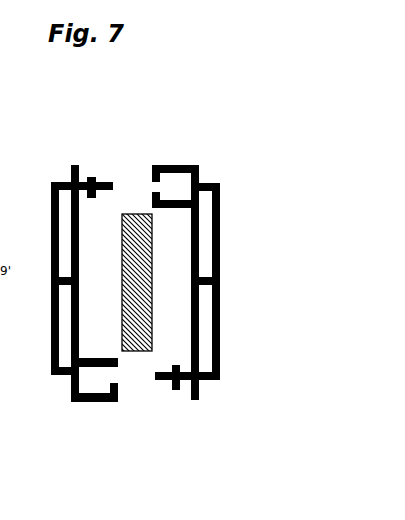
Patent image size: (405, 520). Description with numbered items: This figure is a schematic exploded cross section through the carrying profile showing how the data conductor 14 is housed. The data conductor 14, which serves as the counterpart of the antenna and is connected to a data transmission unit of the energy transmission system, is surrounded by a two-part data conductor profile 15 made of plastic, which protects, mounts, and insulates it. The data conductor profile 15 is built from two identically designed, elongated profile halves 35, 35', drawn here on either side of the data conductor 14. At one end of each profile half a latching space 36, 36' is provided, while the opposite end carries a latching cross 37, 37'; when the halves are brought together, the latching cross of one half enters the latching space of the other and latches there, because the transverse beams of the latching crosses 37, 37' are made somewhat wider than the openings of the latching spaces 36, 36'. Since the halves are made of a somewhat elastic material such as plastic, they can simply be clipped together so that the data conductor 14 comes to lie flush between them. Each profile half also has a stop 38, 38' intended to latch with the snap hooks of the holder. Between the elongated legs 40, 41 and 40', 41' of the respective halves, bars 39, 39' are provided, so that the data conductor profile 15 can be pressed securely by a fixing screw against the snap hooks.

The data conductor 14 is at (140, 352).
The data conductor profile 15 is at (196, 110).
The profile half 35 is at (43, 305).
The latching space 36 is at (94, 408).
The latching cross 37 is at (88, 160).
The stop 38 is at (77, 289).
The bar 39 is at (53, 259).
The elongated leg 40 is at (37, 316).
The elongated leg 41 is at (90, 316).
The profile half 35' is at (223, 266).
The latching space 36' is at (175, 165).
The latching cross 37' is at (187, 410).
The stop 38' is at (209, 287).
The bar 39' is at (219, 259).
The elongated leg 40' is at (236, 316).
The elongated leg 41' is at (179, 316).